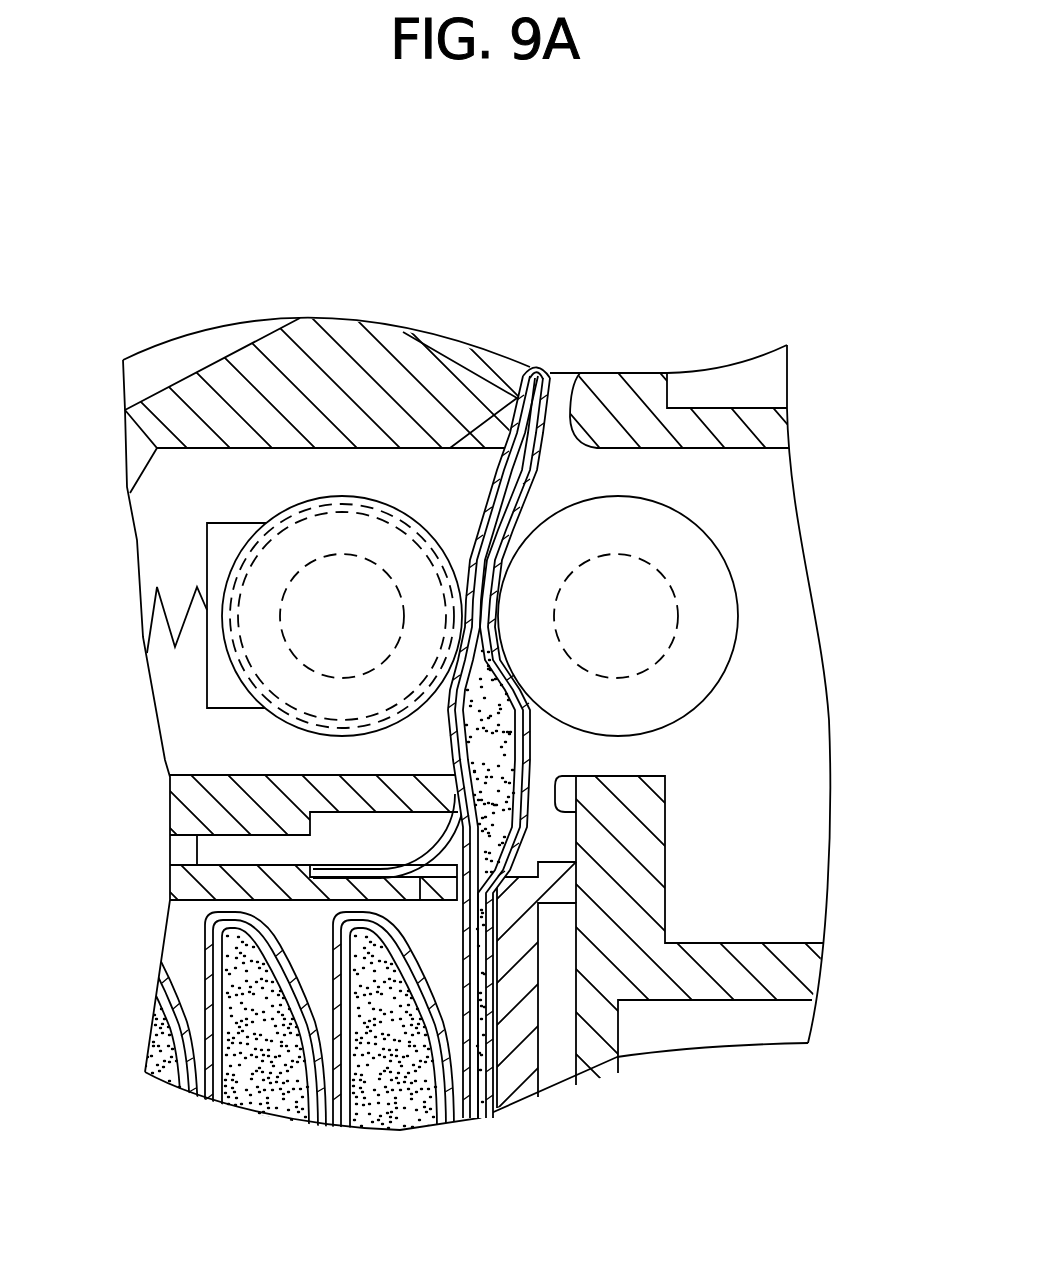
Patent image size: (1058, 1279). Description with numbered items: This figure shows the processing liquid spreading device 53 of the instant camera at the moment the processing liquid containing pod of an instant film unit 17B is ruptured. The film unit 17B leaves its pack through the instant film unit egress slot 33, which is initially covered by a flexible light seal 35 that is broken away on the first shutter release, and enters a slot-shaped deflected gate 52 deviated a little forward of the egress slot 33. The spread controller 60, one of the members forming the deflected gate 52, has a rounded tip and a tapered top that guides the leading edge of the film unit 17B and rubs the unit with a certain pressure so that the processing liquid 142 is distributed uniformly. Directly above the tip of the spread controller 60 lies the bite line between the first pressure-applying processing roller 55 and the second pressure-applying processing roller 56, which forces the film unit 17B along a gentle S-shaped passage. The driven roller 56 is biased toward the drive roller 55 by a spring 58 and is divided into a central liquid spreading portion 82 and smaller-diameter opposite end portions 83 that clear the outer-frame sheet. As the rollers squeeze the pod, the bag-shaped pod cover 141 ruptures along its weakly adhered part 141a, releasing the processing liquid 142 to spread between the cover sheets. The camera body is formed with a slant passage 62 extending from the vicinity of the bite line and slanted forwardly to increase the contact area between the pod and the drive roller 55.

The instant film unit 17B is at (547, 352).
The slant passage 62 is at (577, 373).
The bag-shaped pod cover 141 is at (586, 742).
The weakly adhered part 141a is at (495, 700).
The processing liquid 142 is at (498, 654).
The second pressure-applying processing roller 56 is at (475, 537).
The first pressure-applying processing roller 55 is at (745, 637).
The processing liquid spreading device 53 is at (709, 613).
The slot-shaped deflected gate 52 is at (562, 778).
The spread controller 60 is at (317, 601).
The central liquid spreading portion 82 is at (370, 493).
The opposite end portions 83 is at (323, 493).
The spring 58 is at (147, 653).
The flexible light seal 35 is at (367, 775).
The instant film unit egress slot 33 is at (403, 855).